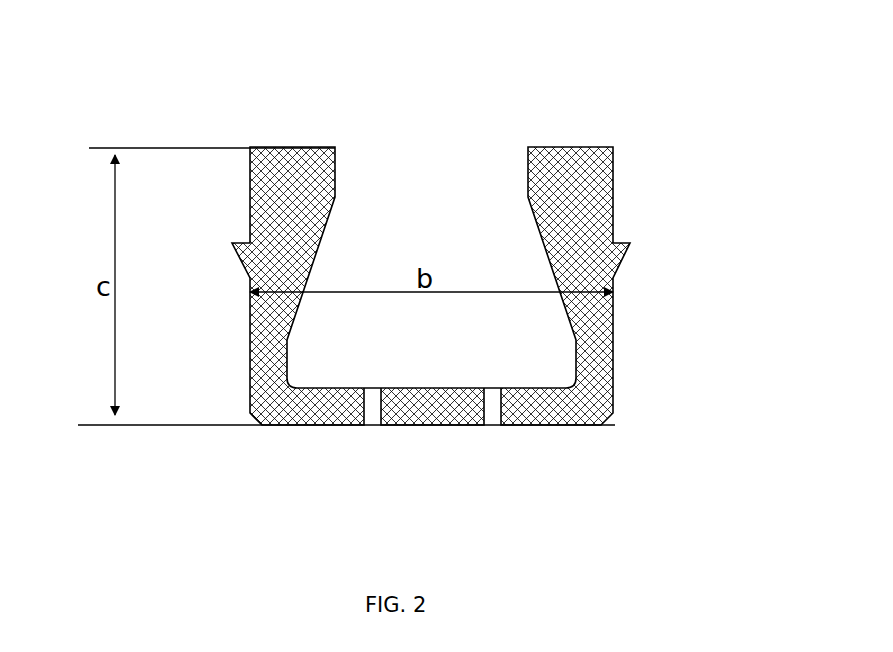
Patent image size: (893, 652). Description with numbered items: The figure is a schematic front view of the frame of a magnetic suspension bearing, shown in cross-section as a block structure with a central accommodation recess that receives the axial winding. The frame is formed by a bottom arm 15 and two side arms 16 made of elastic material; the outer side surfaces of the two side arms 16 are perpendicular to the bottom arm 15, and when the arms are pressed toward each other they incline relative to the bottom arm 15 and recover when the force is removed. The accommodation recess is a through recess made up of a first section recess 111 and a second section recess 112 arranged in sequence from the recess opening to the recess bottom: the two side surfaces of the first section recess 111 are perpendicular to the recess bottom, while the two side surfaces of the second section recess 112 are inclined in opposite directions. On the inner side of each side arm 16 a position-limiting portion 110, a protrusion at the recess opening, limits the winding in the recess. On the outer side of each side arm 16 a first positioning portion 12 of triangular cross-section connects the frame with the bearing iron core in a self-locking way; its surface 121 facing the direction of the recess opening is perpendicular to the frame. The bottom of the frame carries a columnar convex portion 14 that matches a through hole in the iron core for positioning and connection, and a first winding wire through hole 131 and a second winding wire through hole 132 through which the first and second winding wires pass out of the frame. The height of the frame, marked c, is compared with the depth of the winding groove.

The position-limiting portion 110 is at (528, 197).
The first section recess 111 is at (420, 215).
The second section recess 112 is at (495, 278).
The first positioning portion 12 is at (247, 257).
The surface 121 is at (617, 242).
The first winding wire through hole 131 is at (362, 425).
The second winding wire through hole 132 is at (487, 420).
The convex portion 14 is at (428, 417).
The bottom arm 15 is at (545, 413).
The side arms 16 is at (272, 212).